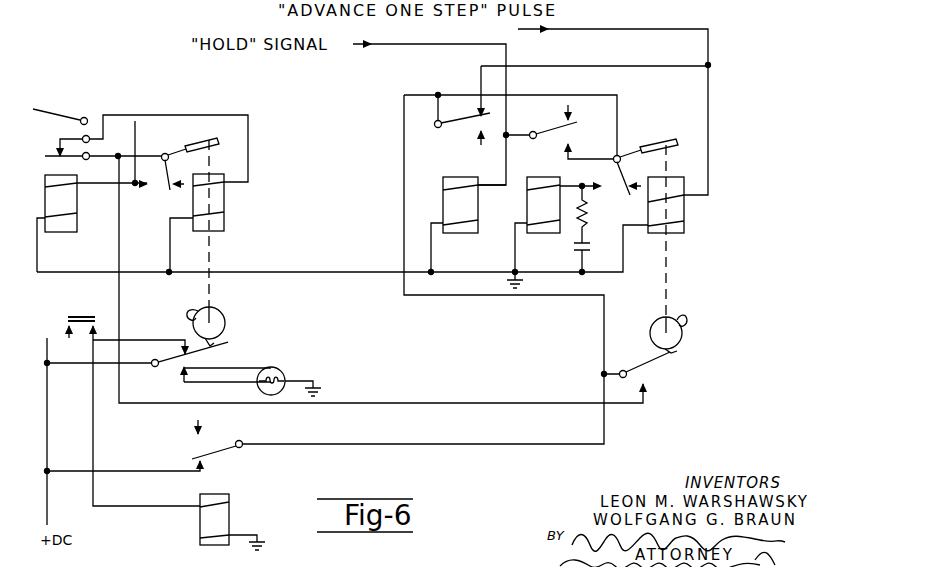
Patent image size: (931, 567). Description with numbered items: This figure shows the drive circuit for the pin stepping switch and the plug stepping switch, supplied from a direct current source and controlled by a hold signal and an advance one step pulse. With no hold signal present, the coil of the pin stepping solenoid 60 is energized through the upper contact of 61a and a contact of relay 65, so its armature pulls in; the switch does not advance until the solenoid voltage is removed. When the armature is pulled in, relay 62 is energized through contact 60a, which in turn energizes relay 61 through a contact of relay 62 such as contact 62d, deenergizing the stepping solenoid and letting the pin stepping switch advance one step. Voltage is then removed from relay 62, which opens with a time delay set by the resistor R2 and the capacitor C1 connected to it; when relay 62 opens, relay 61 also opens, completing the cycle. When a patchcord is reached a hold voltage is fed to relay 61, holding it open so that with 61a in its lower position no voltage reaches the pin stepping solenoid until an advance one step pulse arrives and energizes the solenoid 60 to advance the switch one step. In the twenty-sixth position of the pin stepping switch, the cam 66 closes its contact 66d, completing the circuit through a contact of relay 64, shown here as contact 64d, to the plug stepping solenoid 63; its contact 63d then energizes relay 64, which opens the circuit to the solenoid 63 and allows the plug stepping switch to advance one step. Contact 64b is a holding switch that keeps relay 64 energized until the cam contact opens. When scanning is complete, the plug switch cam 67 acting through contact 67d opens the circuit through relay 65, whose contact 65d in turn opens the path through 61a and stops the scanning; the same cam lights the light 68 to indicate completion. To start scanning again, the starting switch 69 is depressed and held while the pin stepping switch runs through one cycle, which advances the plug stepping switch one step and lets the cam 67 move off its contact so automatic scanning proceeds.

The pin stepping switch solenoid 60 is at (666, 231).
The contact of solenoid 60 60a is at (616, 161).
The relay 61 is at (468, 224).
The contact of relay 61 61a is at (458, 117).
The relay 62 is at (558, 224).
The contact of relay 62 62d is at (547, 127).
The plug stepping solenoid 63 is at (208, 223).
The contact of solenoid 63 63d is at (160, 192).
The relay 64 is at (61, 203).
The holding switch 64b is at (49, 112).
The contact of relay 64 64d is at (44, 131).
The relay 65 is at (214, 519).
The contact of relay 65 65d is at (213, 452).
The cam 66 is at (683, 340).
The contact of cam 66 66d is at (653, 365).
The plug switch cam 67 is at (226, 322).
The contact of cam 67 67d is at (200, 350).
The light 68 is at (283, 368).
The starting switch 69 is at (80, 315).
The resistor R2 is at (590, 214).
The capacitor C1 is at (593, 251).